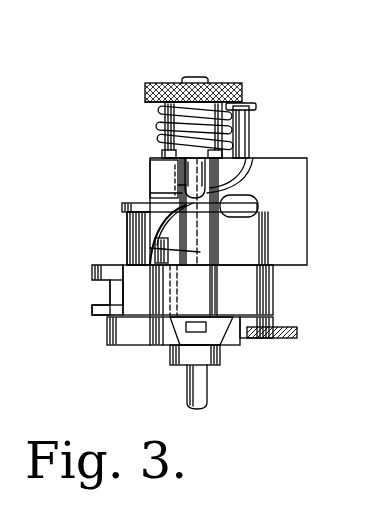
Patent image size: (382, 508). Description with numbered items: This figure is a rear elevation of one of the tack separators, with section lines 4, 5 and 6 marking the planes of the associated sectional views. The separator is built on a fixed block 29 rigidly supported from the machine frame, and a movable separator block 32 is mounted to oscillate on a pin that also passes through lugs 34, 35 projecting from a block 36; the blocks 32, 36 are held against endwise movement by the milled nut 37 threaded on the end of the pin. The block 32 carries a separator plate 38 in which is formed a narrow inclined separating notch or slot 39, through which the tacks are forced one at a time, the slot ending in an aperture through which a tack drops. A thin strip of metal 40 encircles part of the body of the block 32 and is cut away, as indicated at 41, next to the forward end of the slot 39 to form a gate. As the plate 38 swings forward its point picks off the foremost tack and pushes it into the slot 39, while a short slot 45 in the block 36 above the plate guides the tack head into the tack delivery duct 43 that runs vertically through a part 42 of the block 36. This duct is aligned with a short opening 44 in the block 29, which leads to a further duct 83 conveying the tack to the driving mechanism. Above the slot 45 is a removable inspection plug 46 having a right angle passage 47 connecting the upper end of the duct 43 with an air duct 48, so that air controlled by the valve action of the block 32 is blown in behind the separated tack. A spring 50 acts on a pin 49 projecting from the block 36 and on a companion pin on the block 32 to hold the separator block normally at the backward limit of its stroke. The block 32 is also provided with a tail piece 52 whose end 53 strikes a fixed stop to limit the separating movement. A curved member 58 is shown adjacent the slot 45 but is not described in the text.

The section line 4- 4 is at (196, 458).
The section line 5- 5 is at (284, 104).
The section line 6- 6 is at (352, 206).
The block 29 is at (105, 366).
The movable separator block 32 is at (275, 283).
The lug 34 is at (150, 168).
The lug 35 is at (93, 272).
The block 36 is at (300, 168).
The milled nut 37 is at (170, 86).
The separator plate 38 is at (126, 208).
The separating notch or slot 39 is at (150, 243).
The thin strip of metal 40 is at (128, 226).
The cut-away portion 41 is at (200, 252).
The part of the block 42 is at (178, 330).
The tack delivery duct 43 is at (298, 338).
The short opening 44 is at (238, 343).
The short slot 45 is at (220, 192).
The inspection plug 46 is at (166, 140).
The right angle passage 47 is at (150, 186).
The air duct 48 is at (165, 161).
The pin 49 is at (250, 129).
The spring 50 is at (162, 112).
The tail piece 52 is at (93, 311).
The end of tail piece 53 is at (140, 297).
The curved link 58 is at (243, 183).
The duct 83 is at (190, 392).